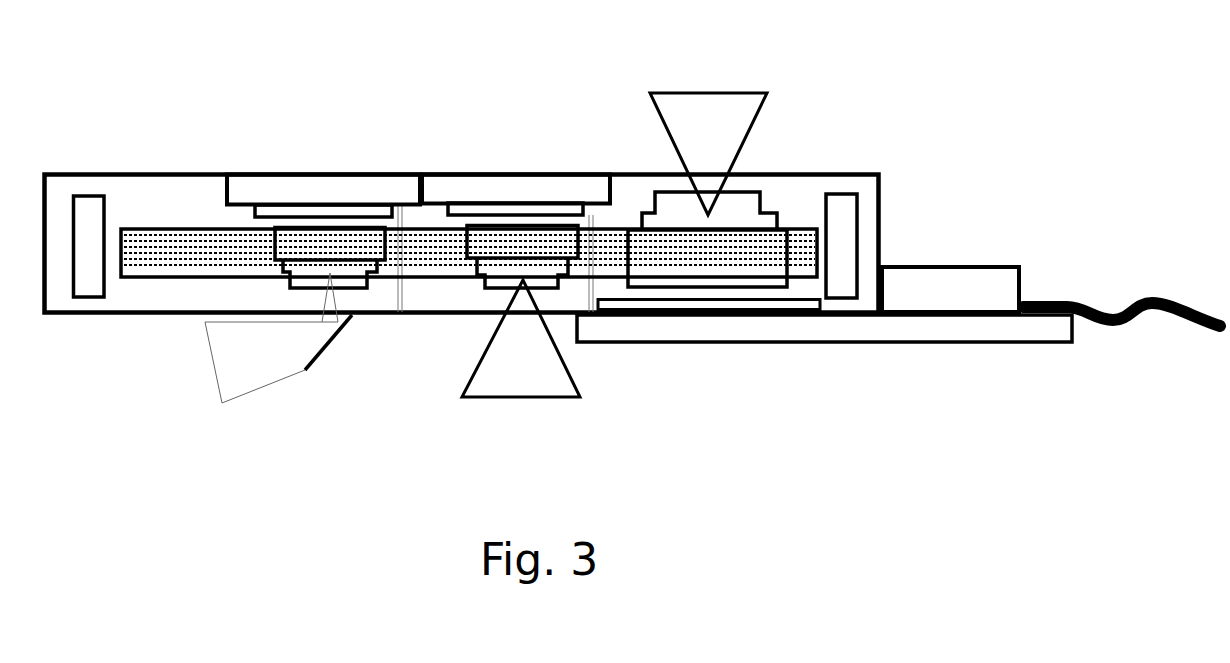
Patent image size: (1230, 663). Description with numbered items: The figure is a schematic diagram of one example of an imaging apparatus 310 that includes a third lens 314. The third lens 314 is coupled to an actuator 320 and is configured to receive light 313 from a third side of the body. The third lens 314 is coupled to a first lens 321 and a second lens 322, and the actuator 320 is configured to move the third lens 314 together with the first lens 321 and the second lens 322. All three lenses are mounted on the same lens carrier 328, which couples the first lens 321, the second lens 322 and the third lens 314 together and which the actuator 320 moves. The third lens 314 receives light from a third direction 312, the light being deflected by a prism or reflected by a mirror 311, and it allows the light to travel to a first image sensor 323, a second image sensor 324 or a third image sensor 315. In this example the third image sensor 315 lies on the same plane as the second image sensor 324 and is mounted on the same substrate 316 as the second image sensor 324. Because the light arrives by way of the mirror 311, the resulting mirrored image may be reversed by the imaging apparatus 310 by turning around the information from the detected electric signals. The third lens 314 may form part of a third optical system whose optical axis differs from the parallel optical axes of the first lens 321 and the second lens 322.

The imaging apparatus 310 is at (953, 85).
The mirror 311 is at (318, 362).
The third direction 312 is at (227, 339).
The light 313 is at (330, 312).
The third lens 314 is at (352, 275).
The third image sensor 315 is at (272, 210).
The substrate 316 is at (363, 193).
The actuator 320 is at (835, 233).
The first lens 321 is at (755, 207).
The second lens 322 is at (598, 318).
The first image sensor 323 is at (643, 305).
The second image sensor 324 is at (483, 210).
The lens carrier 328 is at (617, 237).